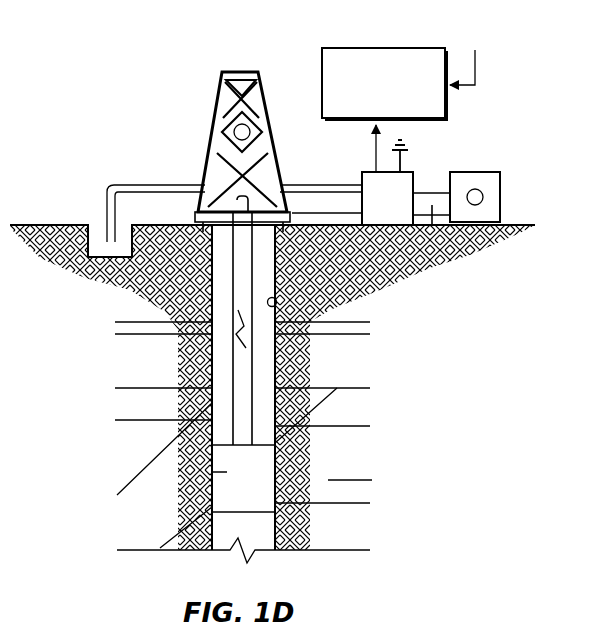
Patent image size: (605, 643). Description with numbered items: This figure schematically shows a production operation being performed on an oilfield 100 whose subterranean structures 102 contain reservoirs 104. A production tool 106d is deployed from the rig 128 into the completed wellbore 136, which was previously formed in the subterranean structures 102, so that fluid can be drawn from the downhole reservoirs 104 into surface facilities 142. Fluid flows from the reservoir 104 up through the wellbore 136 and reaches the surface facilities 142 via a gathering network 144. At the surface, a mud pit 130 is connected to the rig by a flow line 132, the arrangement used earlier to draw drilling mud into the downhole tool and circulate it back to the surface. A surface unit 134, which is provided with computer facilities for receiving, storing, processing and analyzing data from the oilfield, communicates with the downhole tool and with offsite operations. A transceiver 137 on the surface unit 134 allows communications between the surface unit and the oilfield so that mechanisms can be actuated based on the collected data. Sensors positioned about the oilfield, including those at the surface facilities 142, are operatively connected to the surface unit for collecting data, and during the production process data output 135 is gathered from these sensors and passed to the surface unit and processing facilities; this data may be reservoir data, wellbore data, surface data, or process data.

The oilfield 100 is at (147, 70).
The subterranean structures 102 is at (328, 370).
The reservoirs 104 is at (350, 467).
The downhole tool 106d is at (200, 468).
The rig 128 is at (218, 128).
The mud pit 130 is at (110, 280).
The flow line 132 is at (160, 185).
The surface unit 134 is at (372, 172).
The data output 135 is at (407, 45).
The wellbore 136 is at (280, 308).
The transceiver 137 is at (405, 160).
The surface facilities 142 is at (505, 182).
The gathering network 144 is at (432, 225).